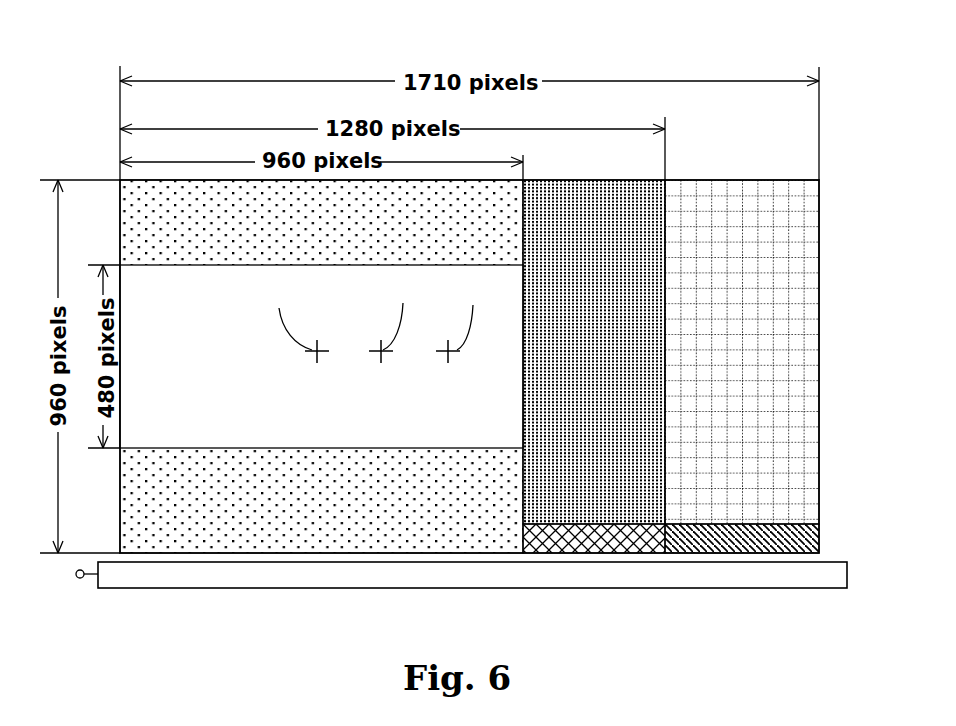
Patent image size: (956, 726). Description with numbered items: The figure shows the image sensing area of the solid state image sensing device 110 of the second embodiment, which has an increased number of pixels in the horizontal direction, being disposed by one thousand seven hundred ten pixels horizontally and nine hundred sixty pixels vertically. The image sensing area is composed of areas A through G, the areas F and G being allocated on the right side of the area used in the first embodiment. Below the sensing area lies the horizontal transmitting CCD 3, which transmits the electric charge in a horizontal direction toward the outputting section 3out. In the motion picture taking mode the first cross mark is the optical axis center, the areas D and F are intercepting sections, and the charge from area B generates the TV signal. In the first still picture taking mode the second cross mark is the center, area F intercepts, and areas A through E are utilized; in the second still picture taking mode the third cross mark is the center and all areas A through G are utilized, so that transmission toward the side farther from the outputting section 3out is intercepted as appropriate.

The solid state image sensing device 110 is at (876, 223).
The horizontal transmitting CCD 3 is at (577, 590).
The outputting section 3out is at (80, 578).